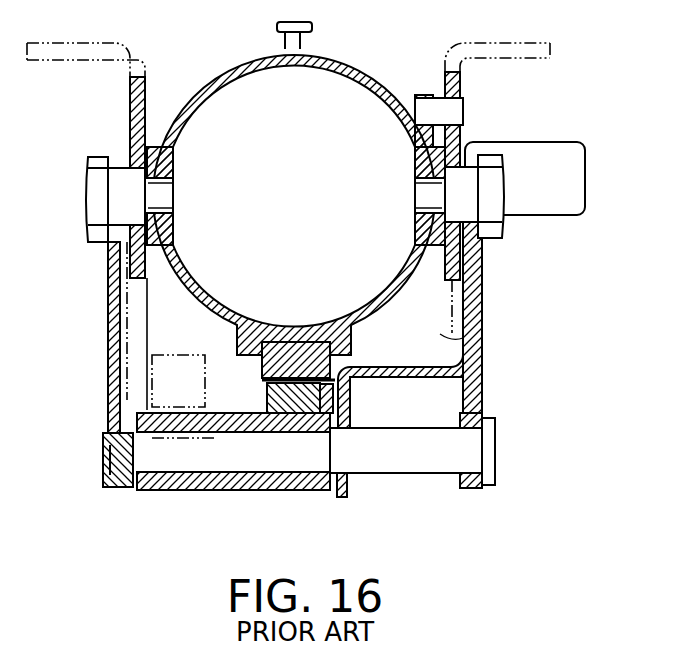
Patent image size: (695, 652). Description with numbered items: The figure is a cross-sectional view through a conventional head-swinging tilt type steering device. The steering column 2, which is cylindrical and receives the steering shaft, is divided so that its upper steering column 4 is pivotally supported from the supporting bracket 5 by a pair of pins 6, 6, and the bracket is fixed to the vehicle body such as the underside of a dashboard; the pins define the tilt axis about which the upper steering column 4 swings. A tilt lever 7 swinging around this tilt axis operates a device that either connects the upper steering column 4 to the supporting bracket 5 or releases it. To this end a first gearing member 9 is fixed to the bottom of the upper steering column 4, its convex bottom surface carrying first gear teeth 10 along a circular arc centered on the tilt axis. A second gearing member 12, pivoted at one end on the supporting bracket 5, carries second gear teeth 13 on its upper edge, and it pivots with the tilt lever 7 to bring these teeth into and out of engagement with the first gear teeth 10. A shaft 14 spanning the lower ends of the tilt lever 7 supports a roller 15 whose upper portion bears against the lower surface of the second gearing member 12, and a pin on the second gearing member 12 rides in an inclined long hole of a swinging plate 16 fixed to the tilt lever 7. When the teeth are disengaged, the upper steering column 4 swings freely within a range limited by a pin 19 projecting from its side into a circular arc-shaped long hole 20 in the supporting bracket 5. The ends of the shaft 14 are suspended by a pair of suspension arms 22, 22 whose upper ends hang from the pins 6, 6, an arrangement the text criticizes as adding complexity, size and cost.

The steering column 2 is at (193, 88).
The upper steering column 4 is at (227, 62).
The supporting bracket 5 is at (455, 248).
The pin 6 is at (133, 193).
The tilt lever 7 is at (575, 177).
The first gearing member 9 is at (295, 352).
The first gear teeth 10 is at (262, 385).
The second gearing member 12 is at (267, 402).
The second gear teeth 13 is at (347, 390).
The shaft 14 is at (400, 474).
The roller 15 is at (235, 490).
The swinging plate 16 is at (407, 366).
The pin 19 is at (427, 107).
The circular arc-shaped long hole 20 is at (460, 93).
The suspension arm 22 is at (108, 322).